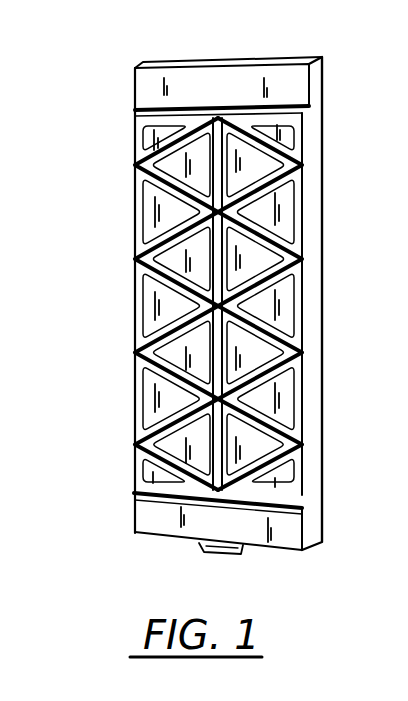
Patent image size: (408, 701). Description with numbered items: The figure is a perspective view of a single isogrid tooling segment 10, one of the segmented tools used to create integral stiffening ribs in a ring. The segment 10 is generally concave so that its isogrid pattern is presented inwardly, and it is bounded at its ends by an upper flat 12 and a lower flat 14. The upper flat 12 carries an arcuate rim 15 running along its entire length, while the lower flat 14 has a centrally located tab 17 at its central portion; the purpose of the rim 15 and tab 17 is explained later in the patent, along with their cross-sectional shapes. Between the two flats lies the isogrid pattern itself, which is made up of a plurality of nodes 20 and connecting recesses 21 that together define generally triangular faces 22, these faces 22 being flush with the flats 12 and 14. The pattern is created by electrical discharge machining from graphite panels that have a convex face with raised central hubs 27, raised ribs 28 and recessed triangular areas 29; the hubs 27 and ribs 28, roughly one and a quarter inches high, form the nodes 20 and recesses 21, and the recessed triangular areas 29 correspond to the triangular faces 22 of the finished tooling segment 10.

The isogrid tooling segment 10 is at (112, 273).
The upper flat 12 is at (140, 88).
The lower flat 14 is at (182, 512).
The arcuate rim 15 is at (322, 58).
The tab 17 is at (215, 553).
The nodes 20 is at (210, 214).
The connecting recesses 21 is at (152, 308).
The triangular faces 22 is at (187, 164).
The raised central hubs 27 is at (155, 402).
The raised ribs 28 is at (213, 452).
The recessed triangular areas 29 is at (187, 357).